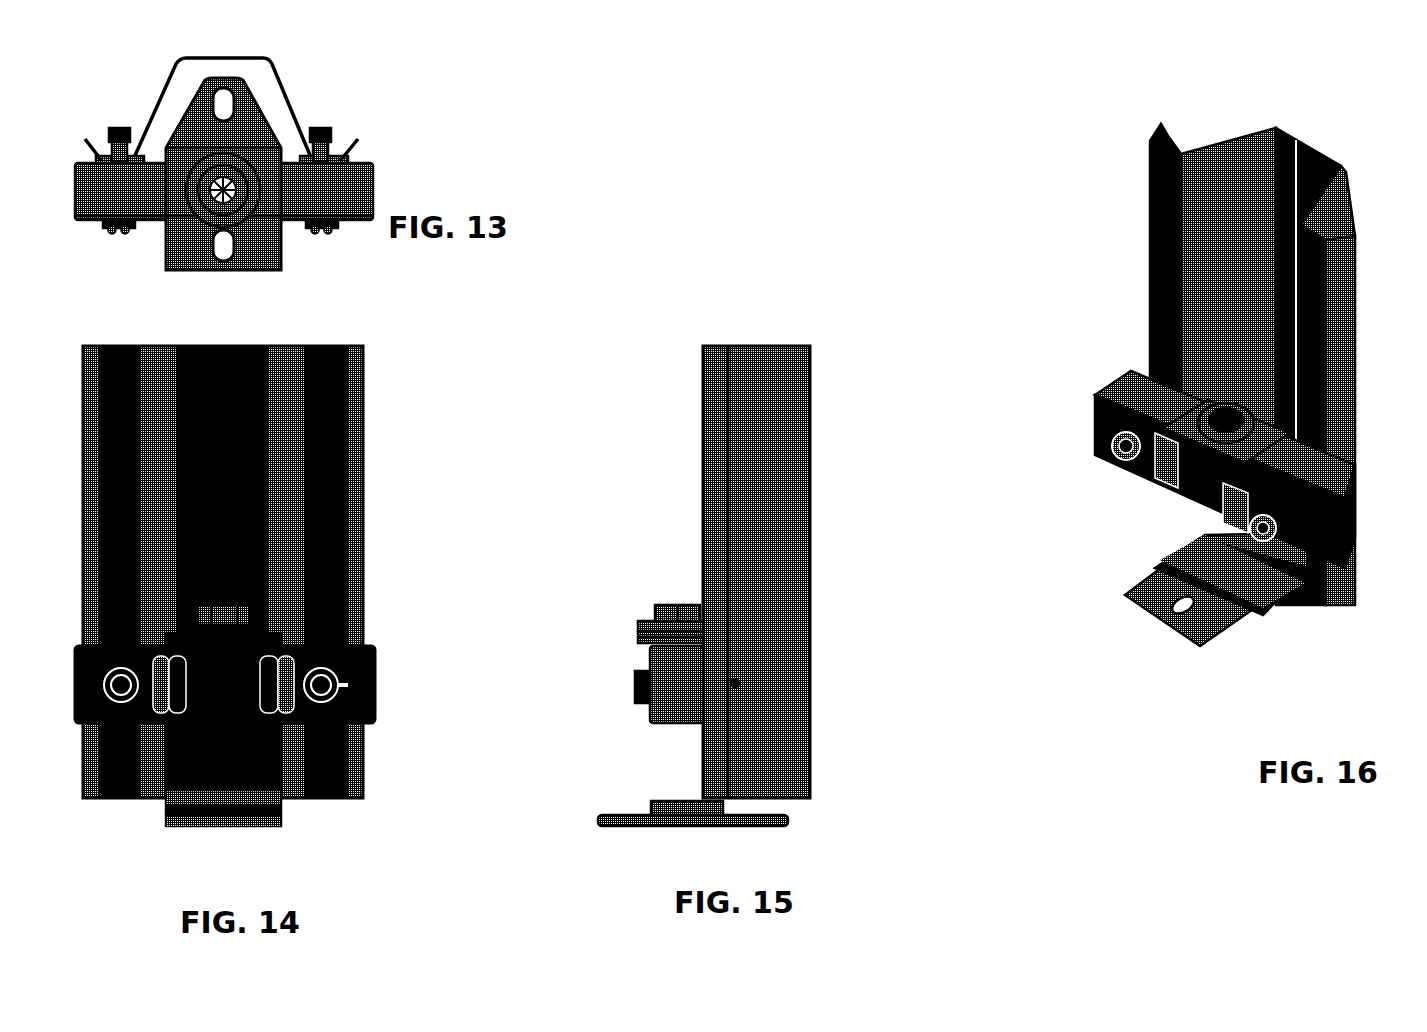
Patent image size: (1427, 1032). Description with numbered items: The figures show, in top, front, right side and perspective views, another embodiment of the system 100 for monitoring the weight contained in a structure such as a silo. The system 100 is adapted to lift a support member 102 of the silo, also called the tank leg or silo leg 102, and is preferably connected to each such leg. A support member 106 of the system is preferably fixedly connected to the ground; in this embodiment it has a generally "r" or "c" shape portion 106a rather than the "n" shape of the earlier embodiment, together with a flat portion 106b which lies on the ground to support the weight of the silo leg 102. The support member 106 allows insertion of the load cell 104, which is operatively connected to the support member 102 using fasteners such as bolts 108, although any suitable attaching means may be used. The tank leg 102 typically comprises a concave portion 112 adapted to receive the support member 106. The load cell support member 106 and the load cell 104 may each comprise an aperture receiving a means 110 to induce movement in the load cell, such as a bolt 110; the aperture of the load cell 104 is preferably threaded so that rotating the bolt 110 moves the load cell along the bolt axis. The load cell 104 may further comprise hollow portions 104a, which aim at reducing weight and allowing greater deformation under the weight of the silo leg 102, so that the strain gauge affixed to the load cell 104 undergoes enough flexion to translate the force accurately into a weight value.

In FIG. 16, the system 100 is at (1052, 178).
In FIG. 14, the support member 102 is at (223, 572).
In FIG. 15, the support member 102 is at (773, 515).
In FIG. 16, the support member 102 is at (1266, 313).
In FIG. 13, the load cell 104 is at (224, 188).
In FIG. 14, the load cell 104 is at (225, 772).
In FIG. 15, the load cell 104 is at (663, 687).
In FIG. 16, the load cell 104 is at (1305, 528).
In FIG. 14, the hollow portion 104a is at (265, 705).
In FIG. 13, the support member 106 is at (195, 264).
In FIG. 14, the support member 106 is at (223, 729).
In FIG. 15, the support member 106 is at (685, 785).
In FIG. 16, the support member 106 is at (1148, 544).
In FIG. 15, the "r" or "c" shape portion 106a is at (648, 632).
In FIG. 16, the "r" or "c" shape portion 106a is at (1167, 405).
In FIG. 15, the flat portion 106b is at (757, 818).
In FIG. 16, the flat portion 106b is at (1200, 622).
In FIG. 13, the bolts 108 is at (318, 150).
In FIG. 14, the bolts 108 is at (313, 695).
In FIG. 13, the bolt 110 is at (238, 203).
In FIG. 14, the bolt 110 is at (228, 602).
In FIG. 15, the bolt 110 is at (665, 595).
In FIG. 16, the bolt 110 is at (1190, 425).
In FIG. 16, the concave portion 112 is at (1250, 150).